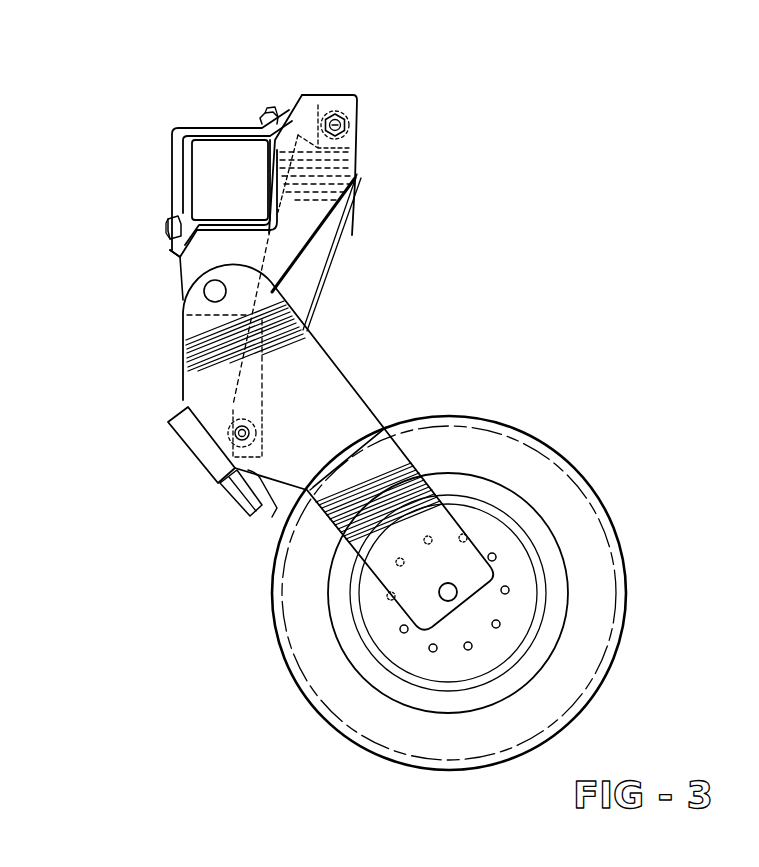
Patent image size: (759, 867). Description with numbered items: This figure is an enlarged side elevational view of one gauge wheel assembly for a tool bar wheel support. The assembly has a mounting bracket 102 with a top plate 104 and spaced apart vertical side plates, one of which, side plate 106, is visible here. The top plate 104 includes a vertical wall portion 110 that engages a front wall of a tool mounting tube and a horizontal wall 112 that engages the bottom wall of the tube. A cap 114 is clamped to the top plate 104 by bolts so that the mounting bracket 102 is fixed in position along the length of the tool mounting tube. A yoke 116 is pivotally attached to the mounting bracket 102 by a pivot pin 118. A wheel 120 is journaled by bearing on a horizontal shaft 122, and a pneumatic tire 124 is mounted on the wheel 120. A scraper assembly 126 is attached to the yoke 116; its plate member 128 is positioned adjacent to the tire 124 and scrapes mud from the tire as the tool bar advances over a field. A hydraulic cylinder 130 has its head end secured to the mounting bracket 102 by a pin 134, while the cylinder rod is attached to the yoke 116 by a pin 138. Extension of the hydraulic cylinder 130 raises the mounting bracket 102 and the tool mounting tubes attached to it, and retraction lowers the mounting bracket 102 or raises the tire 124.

The mounting bracket 102 is at (182, 300).
The top plate 104 is at (328, 93).
The vertical side plate 106 is at (185, 262).
The vertical wall portion 110 is at (266, 188).
The horizontal wall 112 is at (213, 217).
The cap 114 is at (172, 142).
The yoke 116 is at (352, 383).
The pivot pin 118 is at (208, 299).
The wheel 120 is at (380, 632).
The horizontal shaft 122 is at (457, 594).
The pneumatic tire 124 is at (618, 652).
The scraper assembly 126 is at (183, 447).
The plate member 128 is at (273, 515).
The hydraulic cylinder 130 is at (338, 233).
The pin 134 is at (343, 127).
The pin 138 is at (250, 433).